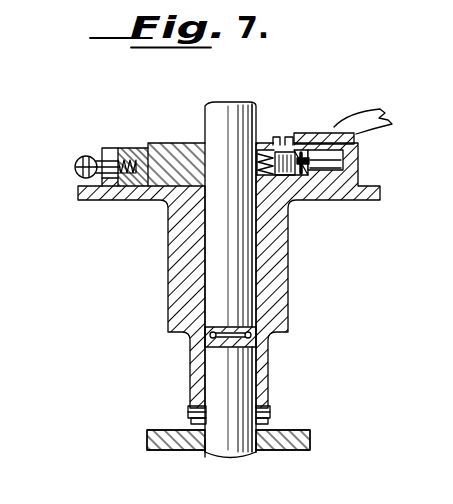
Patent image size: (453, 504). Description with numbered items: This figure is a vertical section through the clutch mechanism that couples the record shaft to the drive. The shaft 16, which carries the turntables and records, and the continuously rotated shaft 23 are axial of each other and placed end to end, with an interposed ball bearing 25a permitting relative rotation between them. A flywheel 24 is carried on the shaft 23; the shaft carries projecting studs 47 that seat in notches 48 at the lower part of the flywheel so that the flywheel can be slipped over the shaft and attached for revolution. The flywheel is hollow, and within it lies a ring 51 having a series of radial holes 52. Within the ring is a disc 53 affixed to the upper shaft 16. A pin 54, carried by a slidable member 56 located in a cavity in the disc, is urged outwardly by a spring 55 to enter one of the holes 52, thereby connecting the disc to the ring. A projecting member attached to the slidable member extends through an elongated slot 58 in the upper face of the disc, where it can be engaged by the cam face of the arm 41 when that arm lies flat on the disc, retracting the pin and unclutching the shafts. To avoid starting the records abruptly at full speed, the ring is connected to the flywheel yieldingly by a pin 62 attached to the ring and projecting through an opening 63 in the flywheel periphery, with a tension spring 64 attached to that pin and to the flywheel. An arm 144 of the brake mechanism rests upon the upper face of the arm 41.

The shaft 16 is at (235, 264).
The shaft 23 is at (226, 453).
The flywheel 24 is at (352, 168).
The ball bearing 25a is at (237, 347).
The arm 41 is at (356, 139).
The studs 47 is at (198, 408).
The notches 48 is at (193, 421).
The ring 51 is at (128, 152).
The radial holes 52 is at (333, 165).
The disc 53 is at (177, 155).
The pin 54 is at (303, 168).
The spring 55 is at (287, 165).
The slidable member 56 is at (300, 135).
The elongated slot 58 is at (269, 150).
The pin 62 is at (77, 165).
The opening 63 is at (108, 152).
The tension spring 64 is at (84, 156).
The arm 144 is at (373, 110).